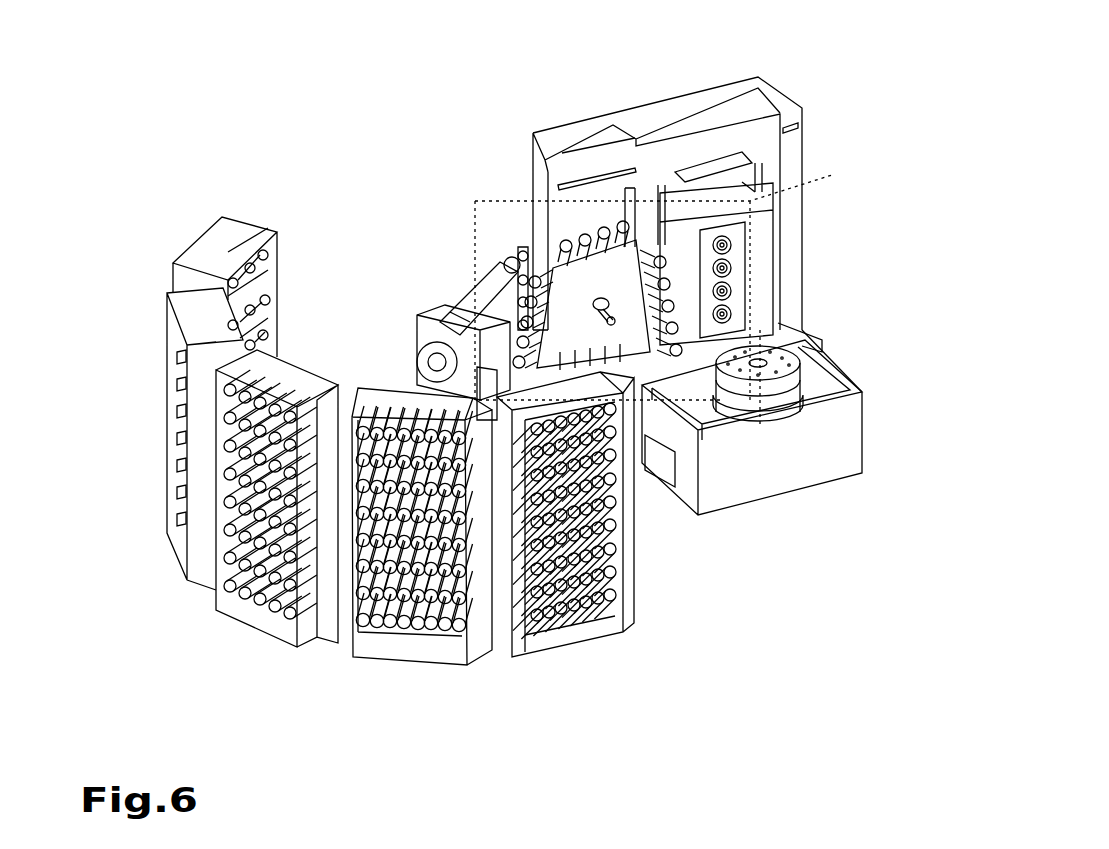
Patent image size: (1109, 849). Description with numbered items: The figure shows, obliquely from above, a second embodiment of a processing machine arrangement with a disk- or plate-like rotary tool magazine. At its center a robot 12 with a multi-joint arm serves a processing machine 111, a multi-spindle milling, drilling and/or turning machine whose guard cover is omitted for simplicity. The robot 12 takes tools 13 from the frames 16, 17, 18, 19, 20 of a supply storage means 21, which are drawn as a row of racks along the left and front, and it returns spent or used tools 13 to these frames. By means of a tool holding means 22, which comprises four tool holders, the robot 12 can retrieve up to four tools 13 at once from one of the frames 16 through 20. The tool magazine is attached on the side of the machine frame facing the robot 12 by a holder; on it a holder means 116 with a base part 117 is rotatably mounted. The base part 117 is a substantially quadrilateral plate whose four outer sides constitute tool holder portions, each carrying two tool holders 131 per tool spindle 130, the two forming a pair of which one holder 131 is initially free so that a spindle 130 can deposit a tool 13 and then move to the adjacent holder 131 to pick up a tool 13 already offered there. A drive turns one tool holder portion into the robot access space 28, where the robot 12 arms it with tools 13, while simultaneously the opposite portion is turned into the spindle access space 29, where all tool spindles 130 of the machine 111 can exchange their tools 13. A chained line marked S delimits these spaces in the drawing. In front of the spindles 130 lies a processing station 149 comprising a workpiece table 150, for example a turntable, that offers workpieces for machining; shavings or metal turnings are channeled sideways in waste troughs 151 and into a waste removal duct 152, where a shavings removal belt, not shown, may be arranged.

The processing machine 111 is at (772, 91).
The holder means 116 is at (578, 185).
The base part 117 is at (790, 128).
The tool holder 131 is at (634, 222).
The sterile zone S is at (670, 287).
The robot access space 28 is at (466, 237).
The spindle access space 29 is at (697, 252).
The tool spindle 130 is at (770, 290).
The tool 13 is at (545, 245).
The robot 12 is at (449, 303).
The tool holding means 22 is at (522, 248).
The processing station 149 is at (832, 373).
The workpiece table 150 is at (773, 380).
The waste trough 151 is at (710, 398).
The waste removal duct 152 is at (668, 475).
The supply storage means 21 is at (294, 225).
The frame 20 is at (233, 240).
The frame 19 is at (175, 585).
The frame 18 is at (258, 646).
The frame 17 is at (423, 660).
The frame 16 is at (568, 640).